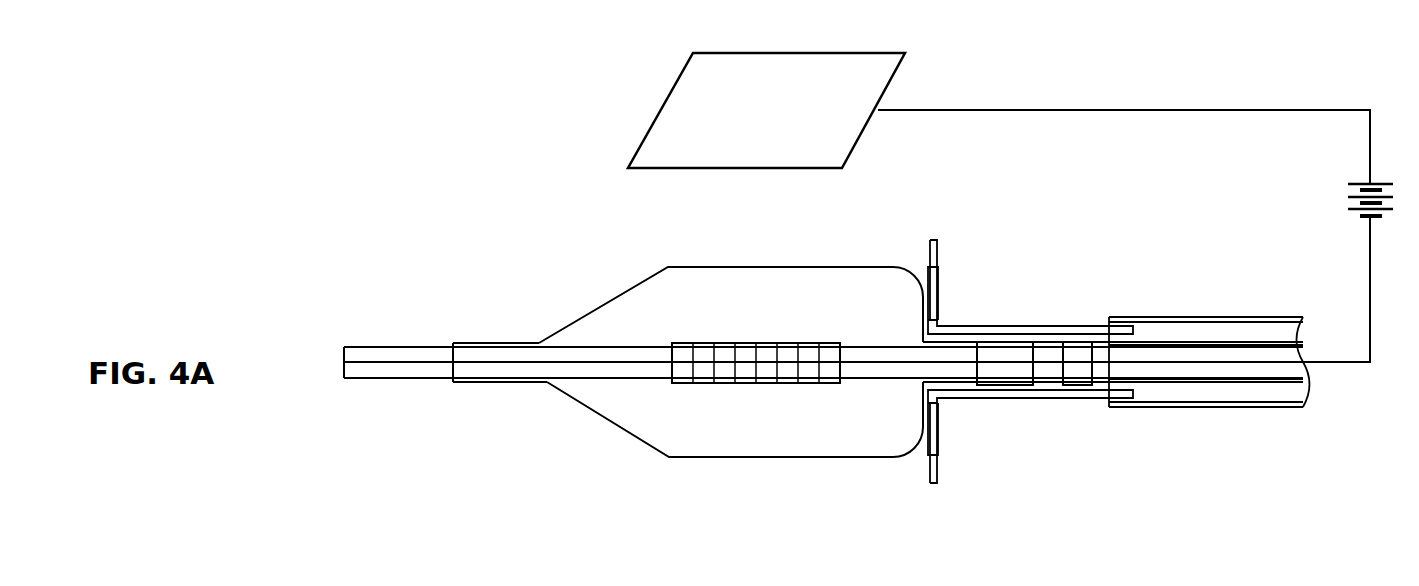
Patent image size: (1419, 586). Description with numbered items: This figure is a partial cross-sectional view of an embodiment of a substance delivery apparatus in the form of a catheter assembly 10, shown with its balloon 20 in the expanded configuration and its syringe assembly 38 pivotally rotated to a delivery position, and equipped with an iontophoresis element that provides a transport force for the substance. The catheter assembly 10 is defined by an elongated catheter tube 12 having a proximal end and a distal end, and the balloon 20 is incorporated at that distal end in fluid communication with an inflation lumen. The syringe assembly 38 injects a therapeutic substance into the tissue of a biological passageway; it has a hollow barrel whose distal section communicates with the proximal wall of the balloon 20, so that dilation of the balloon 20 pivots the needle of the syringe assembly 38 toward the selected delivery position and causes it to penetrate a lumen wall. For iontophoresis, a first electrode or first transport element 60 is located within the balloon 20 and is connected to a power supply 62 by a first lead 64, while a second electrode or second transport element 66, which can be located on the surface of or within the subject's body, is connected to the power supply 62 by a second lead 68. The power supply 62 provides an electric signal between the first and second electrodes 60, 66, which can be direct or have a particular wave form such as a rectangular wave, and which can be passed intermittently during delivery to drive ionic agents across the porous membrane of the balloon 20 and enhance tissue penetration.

The catheter assembly 10 is at (493, 228).
The elongated catheter tube 12 is at (1172, 378).
The balloon 20 is at (622, 292).
The syringe assembly 38 is at (953, 287).
The first electrode or first transport element 60 is at (780, 343).
The power supply 62 is at (1345, 202).
The first lead 64 is at (1370, 290).
The second electrode or second transport element 66 is at (875, 66).
The second lead 68 is at (1137, 108).